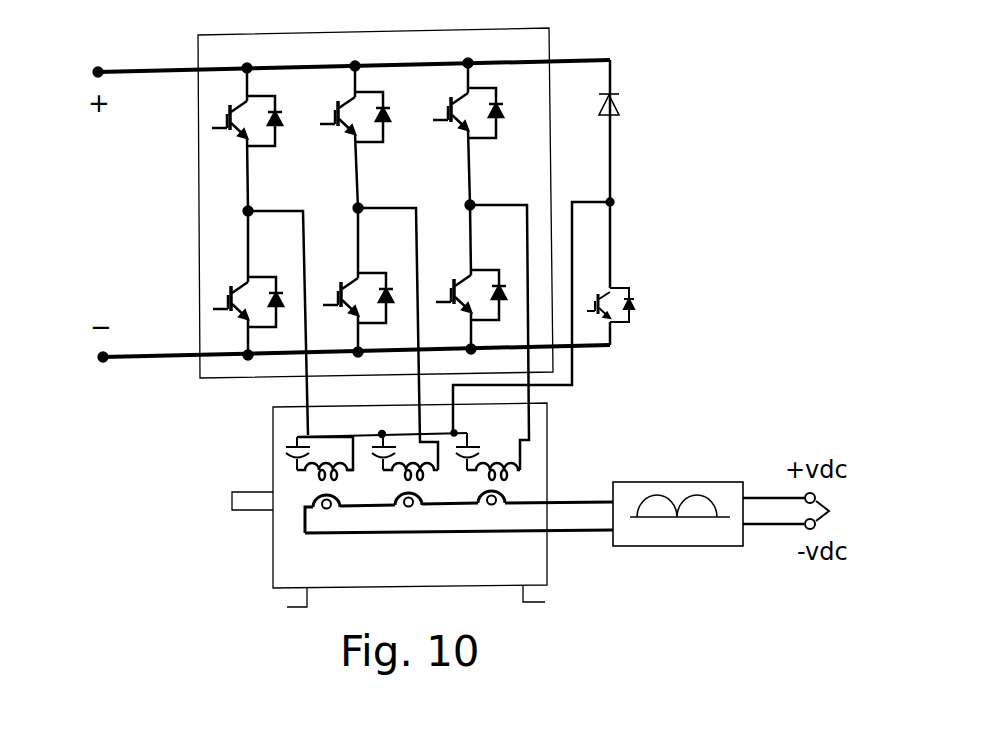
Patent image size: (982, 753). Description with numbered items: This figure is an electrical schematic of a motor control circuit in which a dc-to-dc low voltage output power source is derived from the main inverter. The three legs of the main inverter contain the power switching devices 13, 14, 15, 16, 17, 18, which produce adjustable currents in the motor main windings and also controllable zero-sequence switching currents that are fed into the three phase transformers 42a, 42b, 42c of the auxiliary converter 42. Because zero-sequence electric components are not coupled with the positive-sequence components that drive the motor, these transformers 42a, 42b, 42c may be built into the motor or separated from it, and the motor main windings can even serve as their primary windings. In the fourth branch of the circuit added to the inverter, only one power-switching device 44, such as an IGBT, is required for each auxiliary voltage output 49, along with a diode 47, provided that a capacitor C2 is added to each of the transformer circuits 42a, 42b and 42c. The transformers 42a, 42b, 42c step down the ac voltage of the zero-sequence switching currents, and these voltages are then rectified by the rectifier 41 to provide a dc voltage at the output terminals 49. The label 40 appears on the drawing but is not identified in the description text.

The power switching device 13 is at (215, 126).
The power switching device 14 is at (223, 304).
The power switching device 15 is at (321, 123).
The power switching device 16 is at (330, 300).
The power switching device 17 is at (438, 118).
The power switching device 18 is at (442, 296).
The inverter bridge 40 is at (552, 40).
The rectifier 41 is at (688, 478).
The auxiliary converter 42 is at (270, 566).
The three phase transformer 42a is at (317, 490).
The three phase transformer 42b is at (418, 485).
The three phase transformer 42c is at (492, 490).
The power-switching device 44 is at (599, 303).
The diode 47 is at (618, 110).
The output terminals 49 is at (836, 511).
The capacitor C2 is at (300, 443).